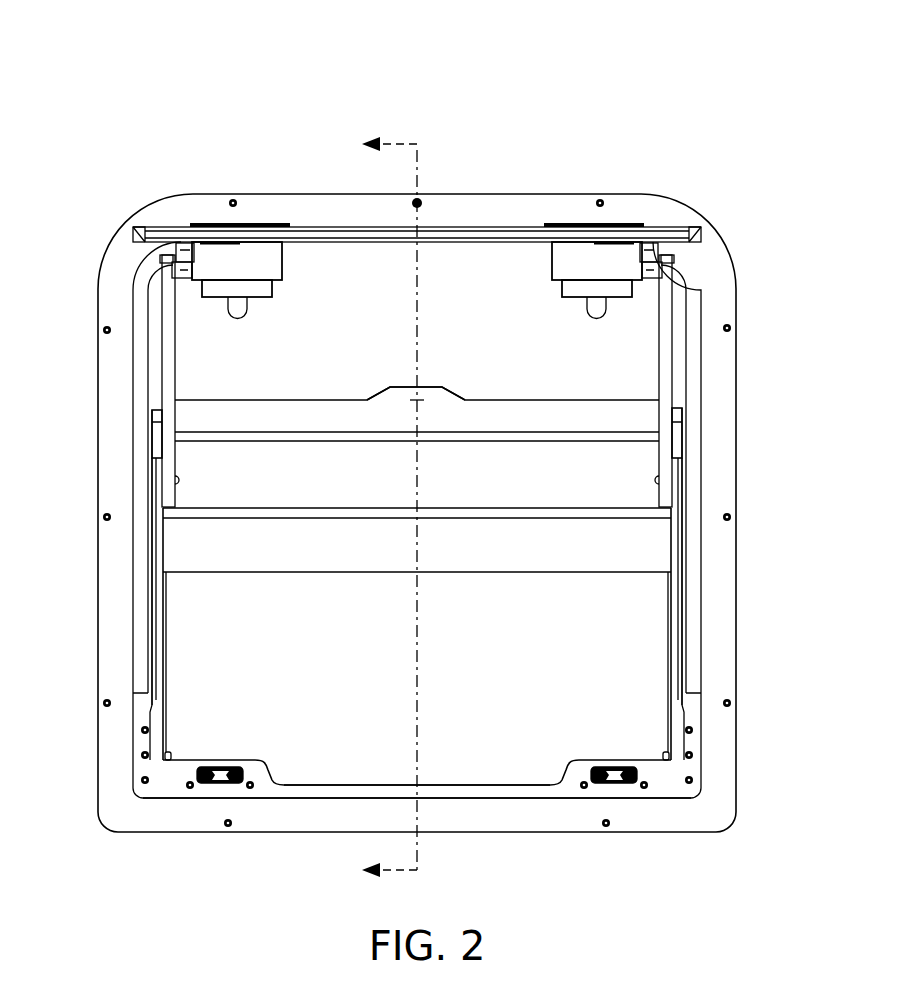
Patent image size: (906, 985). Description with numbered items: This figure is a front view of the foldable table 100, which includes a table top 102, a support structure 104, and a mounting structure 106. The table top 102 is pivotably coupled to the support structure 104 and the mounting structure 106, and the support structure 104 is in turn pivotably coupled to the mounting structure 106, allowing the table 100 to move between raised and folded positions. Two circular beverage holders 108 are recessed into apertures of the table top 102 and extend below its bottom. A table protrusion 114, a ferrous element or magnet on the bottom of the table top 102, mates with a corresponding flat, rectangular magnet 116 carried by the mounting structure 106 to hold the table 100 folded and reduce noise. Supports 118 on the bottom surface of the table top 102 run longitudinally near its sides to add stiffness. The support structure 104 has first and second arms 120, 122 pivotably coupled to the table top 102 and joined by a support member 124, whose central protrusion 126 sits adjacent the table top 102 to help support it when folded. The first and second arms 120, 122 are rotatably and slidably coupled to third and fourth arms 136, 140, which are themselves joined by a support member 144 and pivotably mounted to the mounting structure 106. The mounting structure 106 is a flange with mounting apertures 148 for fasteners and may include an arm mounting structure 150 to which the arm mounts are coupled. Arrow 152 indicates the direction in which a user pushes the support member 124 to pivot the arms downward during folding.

The foldable table 100 is at (240, 88).
The table top 102 is at (452, 232).
The support structure 104 is at (688, 422).
The mounting structure 106 is at (200, 196).
The beverage holder 108 is at (250, 255).
The table protrusion 114 is at (200, 243).
The magnet 116 is at (224, 778).
The support 118 is at (178, 247).
The first arm 120 is at (660, 385).
The second arm 122 is at (168, 403).
The support member 124 is at (515, 425).
The protrusion 126 is at (432, 385).
The third arm 136 is at (677, 625).
The fourth arm 140 is at (160, 600).
The support member 144 is at (318, 548).
The mounting aperture 148 is at (98, 330).
The arm mounting structure 150 is at (490, 800).
The arrow 152 is at (417, 422).